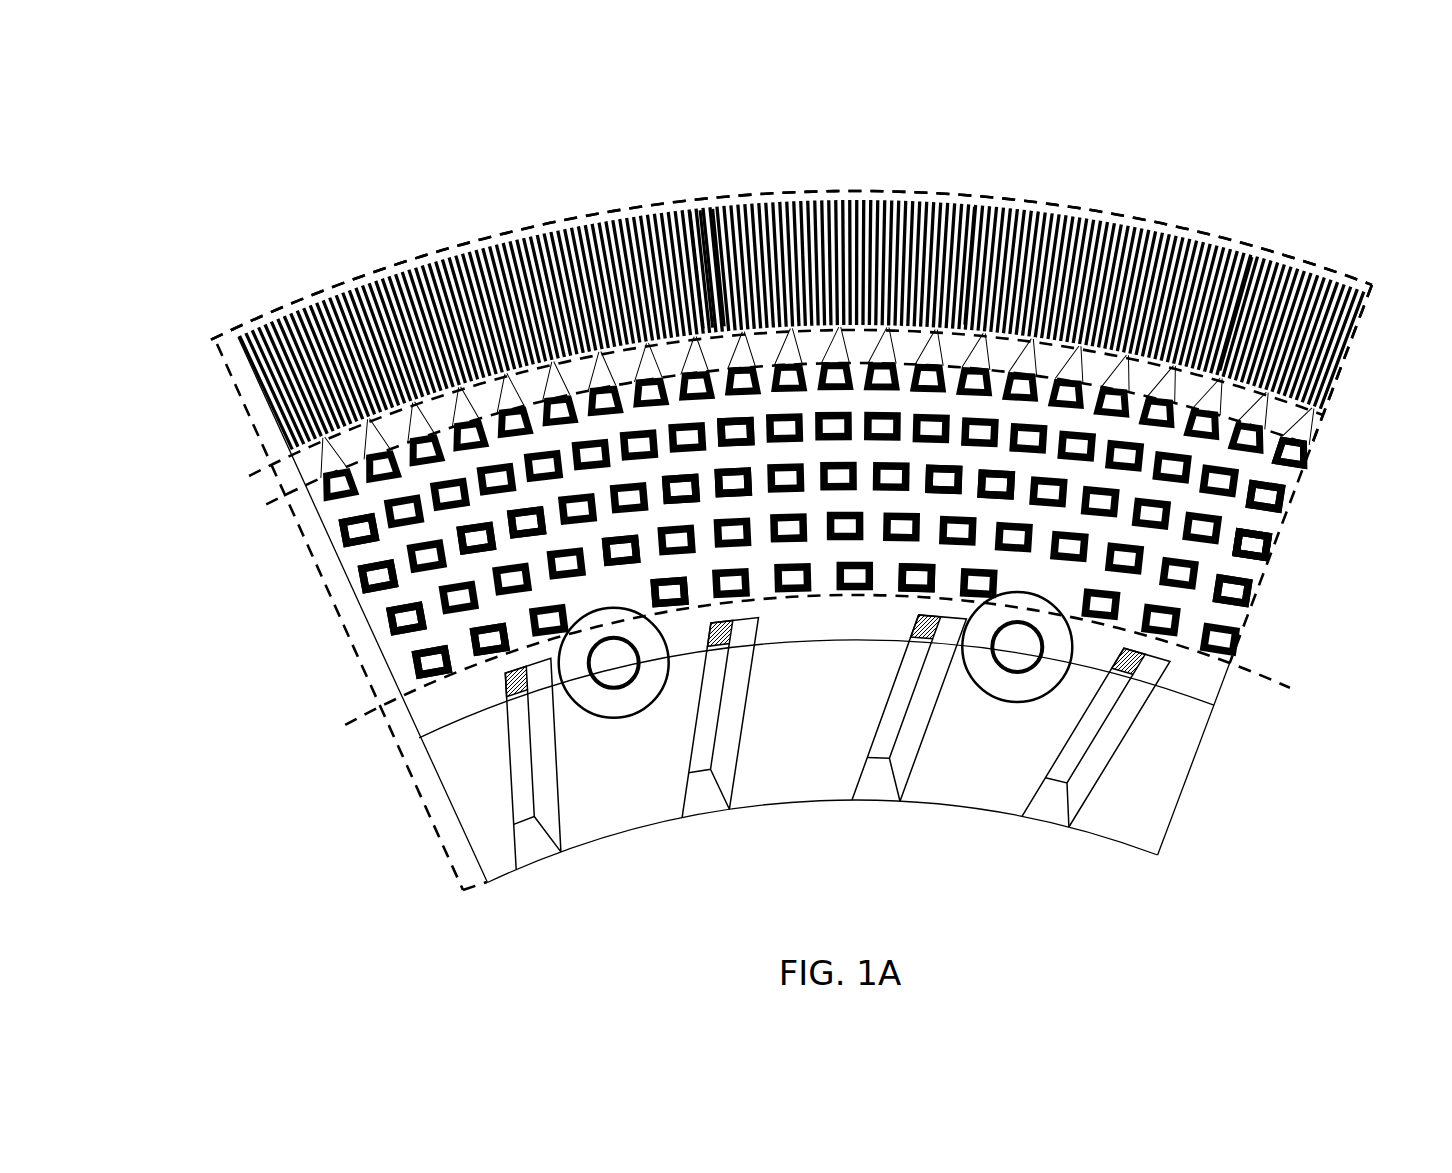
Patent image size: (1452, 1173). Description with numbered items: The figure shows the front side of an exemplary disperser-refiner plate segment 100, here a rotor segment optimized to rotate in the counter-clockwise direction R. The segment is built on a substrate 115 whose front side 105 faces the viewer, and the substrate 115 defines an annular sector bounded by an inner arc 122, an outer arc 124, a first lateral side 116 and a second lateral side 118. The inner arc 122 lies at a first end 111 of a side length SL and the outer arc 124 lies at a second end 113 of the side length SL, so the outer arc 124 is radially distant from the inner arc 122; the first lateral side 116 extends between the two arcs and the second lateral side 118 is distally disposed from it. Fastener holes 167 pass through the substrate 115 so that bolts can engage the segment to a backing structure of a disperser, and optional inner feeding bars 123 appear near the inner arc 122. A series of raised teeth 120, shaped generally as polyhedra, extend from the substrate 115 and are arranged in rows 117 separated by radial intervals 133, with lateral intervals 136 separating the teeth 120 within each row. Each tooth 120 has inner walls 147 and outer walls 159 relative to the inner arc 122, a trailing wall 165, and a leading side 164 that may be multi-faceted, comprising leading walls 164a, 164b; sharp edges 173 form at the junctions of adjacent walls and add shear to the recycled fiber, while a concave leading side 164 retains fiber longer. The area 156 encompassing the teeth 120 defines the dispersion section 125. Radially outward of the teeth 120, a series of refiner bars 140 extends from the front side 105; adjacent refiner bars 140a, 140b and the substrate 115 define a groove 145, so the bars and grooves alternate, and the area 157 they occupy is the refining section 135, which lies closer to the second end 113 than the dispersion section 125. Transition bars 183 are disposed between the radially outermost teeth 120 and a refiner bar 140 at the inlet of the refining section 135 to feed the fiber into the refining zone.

The disperser-refiner plate segment 100 is at (228, 168).
The counter-clockwise direction R is at (522, 148).
The front side 105 is at (312, 521).
The first end 111 is at (455, 900).
The second end 113 is at (178, 355).
The substrate 115 is at (1215, 688).
The first lateral side 116 is at (432, 790).
The rows 117 is at (1330, 462).
The second lateral side 118 is at (1288, 546).
The raised teeth 120 is at (846, 584).
The inner arc 122 is at (990, 808).
The inner feeding bars 123 is at (888, 729).
The outer arc 124 is at (857, 190).
The dispersion section 125 is at (320, 613).
The radial intervals 133 is at (737, 447).
The refining section 135 is at (213, 391).
The lateral intervals 136 is at (712, 478).
The refiner bars 140 is at (1079, 200).
The refiner bar 140a is at (700, 218).
The refiner bar 140b is at (708, 218).
The groove 145 is at (688, 190).
The inner walls 147 is at (905, 587).
The area 156 is at (345, 566).
The area 157 is at (262, 423).
The outer walls 159 is at (612, 532).
The leading side 164 is at (465, 650).
The leading wall 164a is at (414, 672).
The leading wall 164b is at (398, 632).
The trailing wall 165 is at (700, 594).
The fastener holes 167 is at (609, 678).
The sharp edges 173 is at (534, 500).
The transition bars 183 is at (1302, 434).
The side length SL is at (375, 706).